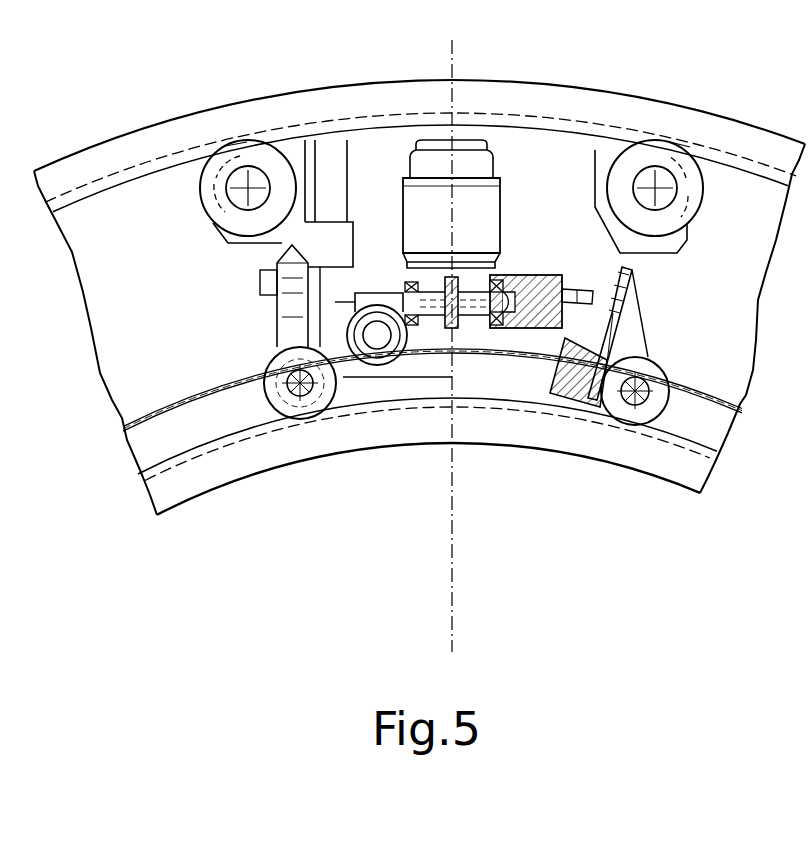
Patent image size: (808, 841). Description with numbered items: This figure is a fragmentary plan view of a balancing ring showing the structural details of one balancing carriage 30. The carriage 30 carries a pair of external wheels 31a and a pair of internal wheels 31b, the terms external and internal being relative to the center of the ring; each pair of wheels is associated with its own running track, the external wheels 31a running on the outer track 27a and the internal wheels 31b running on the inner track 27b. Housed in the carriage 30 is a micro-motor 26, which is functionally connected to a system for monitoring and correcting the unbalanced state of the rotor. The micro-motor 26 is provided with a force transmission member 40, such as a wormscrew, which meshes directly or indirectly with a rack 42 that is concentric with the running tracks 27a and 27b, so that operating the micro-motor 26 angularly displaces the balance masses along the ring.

The micro-motor 26 is at (470, 192).
The carriage 30 is at (548, 160).
The outer track 27a is at (117, 177).
The inner track 27b is at (200, 452).
The external wheels 31a is at (232, 162).
The internal wheels 31b is at (317, 402).
The force transmission member 40 is at (383, 294).
The rack 42 is at (175, 398).